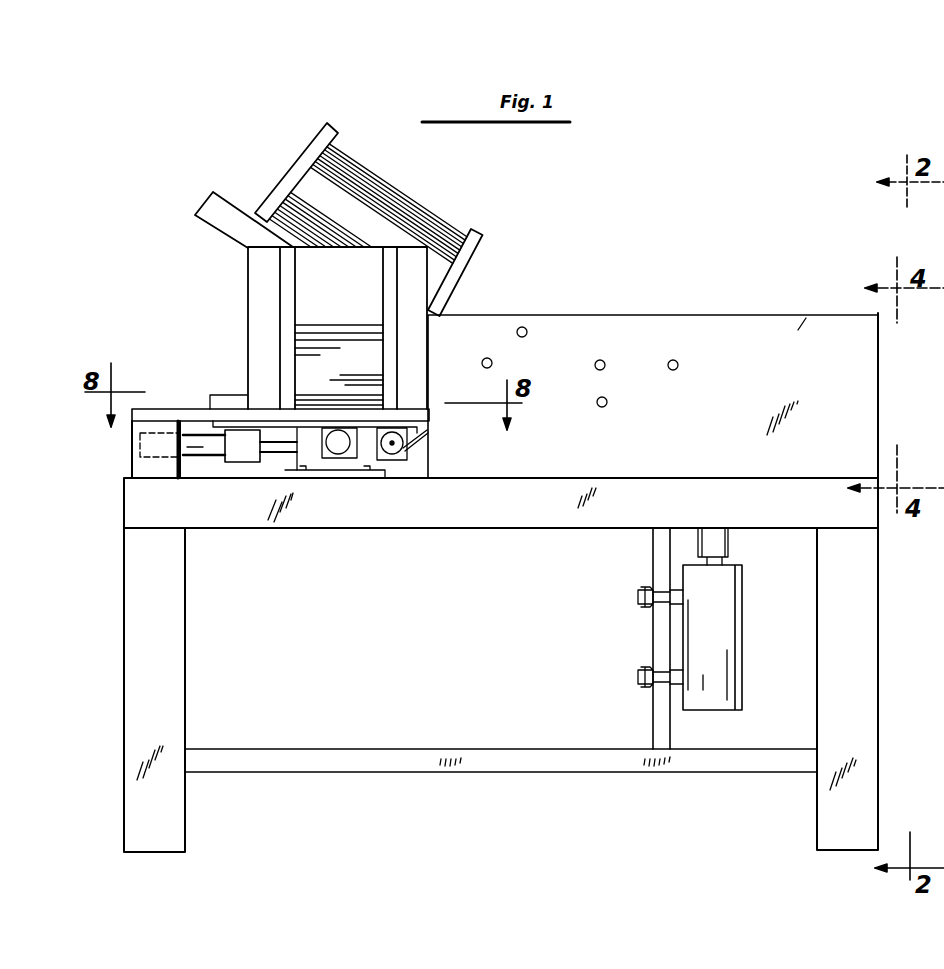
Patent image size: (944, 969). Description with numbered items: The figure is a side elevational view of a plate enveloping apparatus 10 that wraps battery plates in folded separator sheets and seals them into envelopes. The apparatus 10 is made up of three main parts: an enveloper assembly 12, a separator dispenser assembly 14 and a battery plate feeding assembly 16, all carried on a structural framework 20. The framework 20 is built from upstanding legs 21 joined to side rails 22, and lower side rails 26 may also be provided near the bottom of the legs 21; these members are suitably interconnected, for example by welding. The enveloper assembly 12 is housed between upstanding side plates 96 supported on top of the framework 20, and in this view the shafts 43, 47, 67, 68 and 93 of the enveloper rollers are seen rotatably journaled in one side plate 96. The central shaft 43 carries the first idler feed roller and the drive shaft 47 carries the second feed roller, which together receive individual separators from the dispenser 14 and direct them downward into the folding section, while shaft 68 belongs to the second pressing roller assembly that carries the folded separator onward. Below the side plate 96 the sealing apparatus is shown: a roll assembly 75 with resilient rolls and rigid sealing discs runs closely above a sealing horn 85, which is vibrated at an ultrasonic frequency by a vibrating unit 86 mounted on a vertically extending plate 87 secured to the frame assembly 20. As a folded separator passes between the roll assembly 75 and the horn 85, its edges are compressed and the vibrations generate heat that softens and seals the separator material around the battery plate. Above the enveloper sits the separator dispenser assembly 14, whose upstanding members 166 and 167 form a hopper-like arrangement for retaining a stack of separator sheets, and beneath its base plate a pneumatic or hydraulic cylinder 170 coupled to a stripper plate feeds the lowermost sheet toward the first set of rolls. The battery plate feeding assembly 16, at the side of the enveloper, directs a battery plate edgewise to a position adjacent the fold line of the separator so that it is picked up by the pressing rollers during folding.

The plate enveloping apparatus 10 is at (645, 281).
The enveloper assembly 12 is at (680, 314).
The separator dispenser assembly 14 is at (389, 170).
The battery plate feeding assembly 16 is at (222, 393).
The structural framework 20 is at (520, 582).
The upstanding legs 21 is at (172, 640).
The side rails 22 is at (443, 517).
The lower side rails 26 is at (400, 755).
The central shaft 43 is at (527, 328).
The drive shaft 47 is at (487, 358).
The shaft 67 is at (605, 360).
The shaft 68 is at (602, 407).
The roll assembly 75 is at (716, 638).
The sealing horn 85 is at (718, 542).
The vibrating unit 86 is at (723, 625).
The vertically extending plate 87 is at (662, 730).
The shaft 93 is at (678, 365).
The side plate 96 is at (806, 318).
The upstanding member 166 is at (480, 243).
The upstanding member 167 is at (290, 168).
The cylinder 170 is at (250, 218).